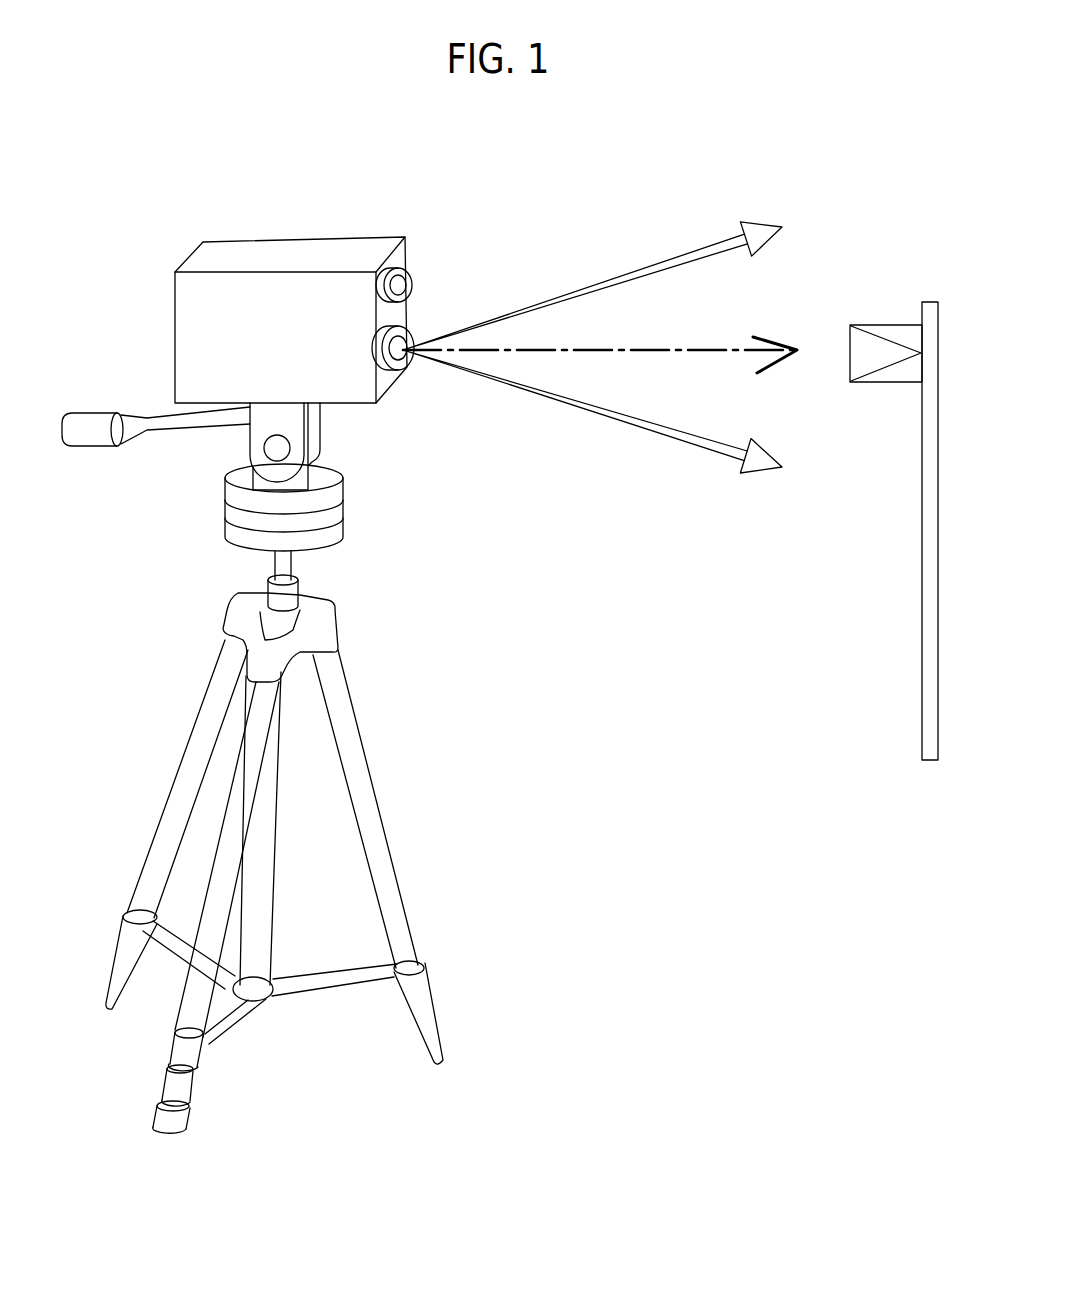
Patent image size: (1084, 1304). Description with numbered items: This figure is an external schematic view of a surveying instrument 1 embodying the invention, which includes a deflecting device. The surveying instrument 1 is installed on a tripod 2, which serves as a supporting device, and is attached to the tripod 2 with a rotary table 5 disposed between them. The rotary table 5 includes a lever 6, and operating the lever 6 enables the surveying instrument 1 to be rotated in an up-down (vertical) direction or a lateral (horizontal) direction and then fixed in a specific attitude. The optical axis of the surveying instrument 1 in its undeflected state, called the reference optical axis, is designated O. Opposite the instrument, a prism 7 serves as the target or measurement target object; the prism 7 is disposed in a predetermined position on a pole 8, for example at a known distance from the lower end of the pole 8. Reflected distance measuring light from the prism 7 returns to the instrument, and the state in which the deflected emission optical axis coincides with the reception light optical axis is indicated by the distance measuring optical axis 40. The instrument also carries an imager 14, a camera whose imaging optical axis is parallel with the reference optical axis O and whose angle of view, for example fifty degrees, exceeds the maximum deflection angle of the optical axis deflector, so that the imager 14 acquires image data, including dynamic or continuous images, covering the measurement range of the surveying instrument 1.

The surveying instrument 1 is at (228, 238).
The tripod 2 is at (180, 758).
The rotary table 5 is at (222, 537).
The lever 6 is at (118, 407).
The prism 7 is at (877, 325).
The pole 8 is at (922, 620).
The imager 14 is at (406, 279).
The distance measuring optical axis 40 is at (628, 270).
The reference optical axis O is at (573, 347).